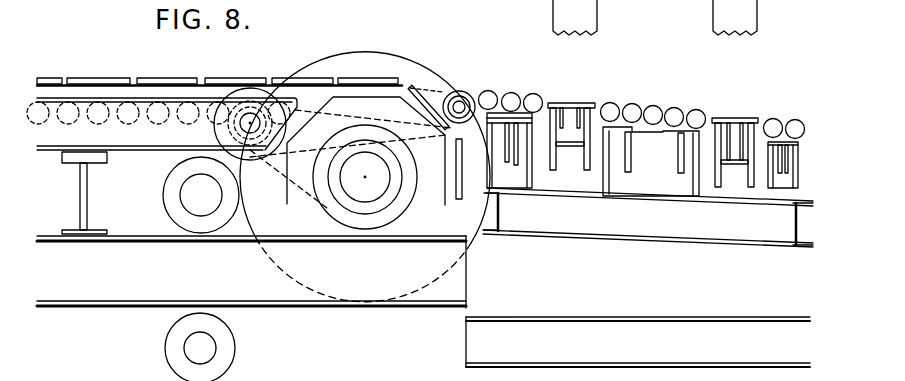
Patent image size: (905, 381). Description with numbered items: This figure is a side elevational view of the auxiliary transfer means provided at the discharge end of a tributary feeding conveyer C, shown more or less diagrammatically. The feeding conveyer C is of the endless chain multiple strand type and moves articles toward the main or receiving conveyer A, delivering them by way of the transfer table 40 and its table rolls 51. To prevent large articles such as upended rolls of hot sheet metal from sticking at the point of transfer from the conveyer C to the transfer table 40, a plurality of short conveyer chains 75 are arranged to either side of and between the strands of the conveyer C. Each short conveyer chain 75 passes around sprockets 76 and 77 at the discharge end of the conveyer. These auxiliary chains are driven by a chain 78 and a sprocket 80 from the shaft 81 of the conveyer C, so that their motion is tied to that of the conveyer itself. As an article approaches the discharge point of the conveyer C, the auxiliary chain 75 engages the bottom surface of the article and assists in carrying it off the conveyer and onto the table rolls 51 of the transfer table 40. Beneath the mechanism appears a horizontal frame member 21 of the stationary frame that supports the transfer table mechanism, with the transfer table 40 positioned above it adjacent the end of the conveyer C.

The feeding conveyer C is at (93, 77).
The sprocket 76 is at (247, 90).
The short conveyer chain 75 is at (427, 86).
The sprocket 77 is at (463, 91).
The drive chain 78 is at (307, 197).
The sprocket 80 is at (398, 203).
The shaft 81 is at (363, 190).
The table rolls 51 is at (527, 94).
The main conveyer A is at (578, 102).
The transfer table 40 is at (558, 240).
The horizontal frame member 21 is at (607, 318).